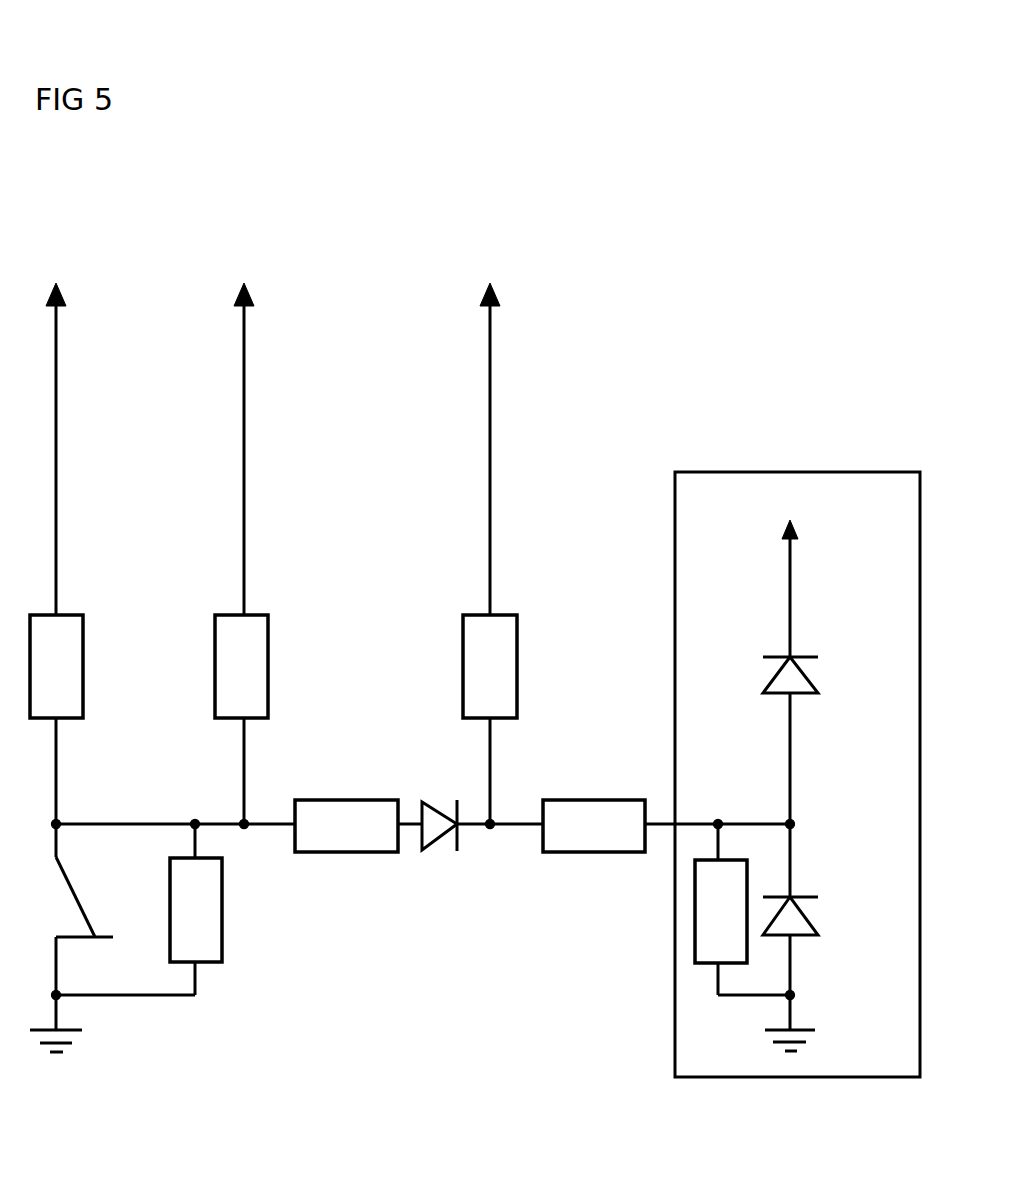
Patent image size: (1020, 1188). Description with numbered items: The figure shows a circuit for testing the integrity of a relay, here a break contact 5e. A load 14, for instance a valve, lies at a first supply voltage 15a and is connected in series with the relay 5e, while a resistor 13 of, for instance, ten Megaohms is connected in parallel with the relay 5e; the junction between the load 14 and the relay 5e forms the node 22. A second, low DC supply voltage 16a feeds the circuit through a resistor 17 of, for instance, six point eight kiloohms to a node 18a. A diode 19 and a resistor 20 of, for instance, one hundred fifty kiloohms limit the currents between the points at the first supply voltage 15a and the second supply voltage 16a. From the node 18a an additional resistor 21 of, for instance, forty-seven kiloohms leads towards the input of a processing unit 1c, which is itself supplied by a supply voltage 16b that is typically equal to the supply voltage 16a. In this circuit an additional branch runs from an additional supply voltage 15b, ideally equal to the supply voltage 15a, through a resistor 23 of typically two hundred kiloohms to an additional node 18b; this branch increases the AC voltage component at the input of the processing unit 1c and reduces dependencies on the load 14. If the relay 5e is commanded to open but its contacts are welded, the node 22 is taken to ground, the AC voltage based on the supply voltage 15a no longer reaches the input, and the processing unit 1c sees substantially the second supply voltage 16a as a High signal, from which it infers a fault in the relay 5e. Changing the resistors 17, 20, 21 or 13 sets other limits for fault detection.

The processing unit 1c is at (797, 797).
The break contact 5e is at (61, 909).
The resistor 13 is at (196, 909).
The load 14 is at (56, 719).
The first supply voltage 15a is at (58, 426).
The additional supply voltage 15b is at (246, 426).
The second supply voltage 16a is at (490, 426).
The supply voltage 16b is at (788, 569).
The resistor 17 is at (490, 719).
The node 18a is at (493, 845).
The additional node 18b is at (255, 845).
The diode 19 is at (437, 849).
The resistor 20 is at (346, 826).
The resistor 21 is at (594, 826).
The node 22 is at (32, 827).
The resistor 23 is at (241, 719).